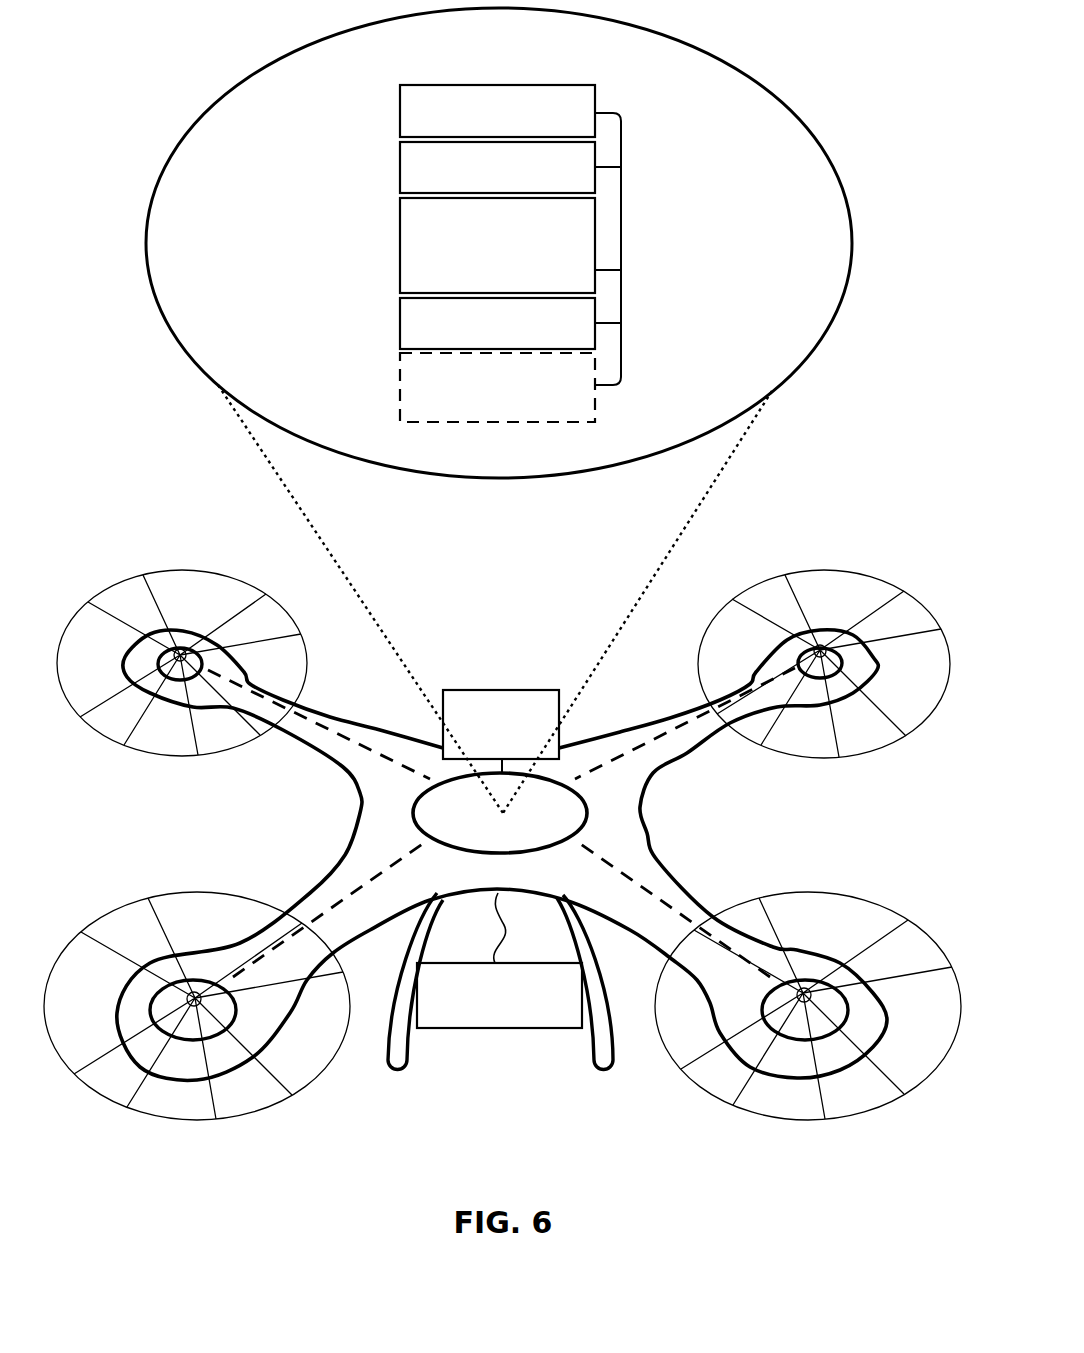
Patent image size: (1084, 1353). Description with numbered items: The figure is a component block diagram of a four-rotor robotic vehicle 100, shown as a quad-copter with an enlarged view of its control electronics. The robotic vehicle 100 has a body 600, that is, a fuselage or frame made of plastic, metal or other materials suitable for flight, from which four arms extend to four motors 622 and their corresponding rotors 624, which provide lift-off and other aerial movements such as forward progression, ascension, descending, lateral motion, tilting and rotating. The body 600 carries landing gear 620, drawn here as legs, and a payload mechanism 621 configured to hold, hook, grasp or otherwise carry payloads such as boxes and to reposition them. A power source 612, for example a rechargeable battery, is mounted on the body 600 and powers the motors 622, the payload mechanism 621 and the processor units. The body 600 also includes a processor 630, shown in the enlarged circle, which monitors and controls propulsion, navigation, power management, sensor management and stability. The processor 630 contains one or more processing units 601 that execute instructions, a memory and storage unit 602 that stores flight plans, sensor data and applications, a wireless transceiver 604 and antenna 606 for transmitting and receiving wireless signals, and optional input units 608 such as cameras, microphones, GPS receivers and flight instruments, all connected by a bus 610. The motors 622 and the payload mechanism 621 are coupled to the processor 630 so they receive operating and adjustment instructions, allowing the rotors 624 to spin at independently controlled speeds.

The robotic vehicle 100 is at (502, 898).
The body 600 is at (382, 803).
The processing unit(s) 601 is at (497, 111).
The memory and/or storage unit 602 is at (497, 167).
The wireless transceiver 604 is at (497, 245).
The antenna 606 is at (497, 323).
The input units 608 is at (497, 387).
The bus 610 is at (619, 249).
The power source 612 is at (501, 731).
The landing gear 620 is at (610, 1078).
The payload mechanism 621 is at (499, 960).
The motors 622 is at (813, 1007).
The rotors 624 is at (797, 1123).
The processor 630 is at (770, 92).